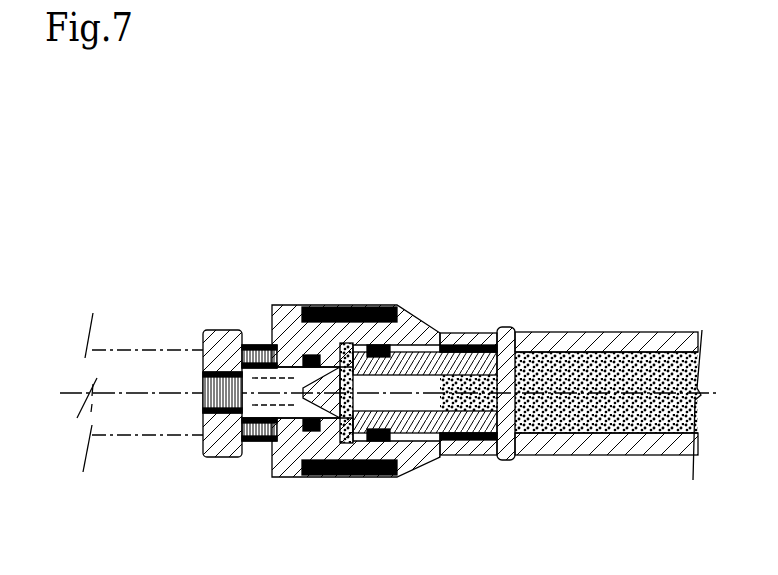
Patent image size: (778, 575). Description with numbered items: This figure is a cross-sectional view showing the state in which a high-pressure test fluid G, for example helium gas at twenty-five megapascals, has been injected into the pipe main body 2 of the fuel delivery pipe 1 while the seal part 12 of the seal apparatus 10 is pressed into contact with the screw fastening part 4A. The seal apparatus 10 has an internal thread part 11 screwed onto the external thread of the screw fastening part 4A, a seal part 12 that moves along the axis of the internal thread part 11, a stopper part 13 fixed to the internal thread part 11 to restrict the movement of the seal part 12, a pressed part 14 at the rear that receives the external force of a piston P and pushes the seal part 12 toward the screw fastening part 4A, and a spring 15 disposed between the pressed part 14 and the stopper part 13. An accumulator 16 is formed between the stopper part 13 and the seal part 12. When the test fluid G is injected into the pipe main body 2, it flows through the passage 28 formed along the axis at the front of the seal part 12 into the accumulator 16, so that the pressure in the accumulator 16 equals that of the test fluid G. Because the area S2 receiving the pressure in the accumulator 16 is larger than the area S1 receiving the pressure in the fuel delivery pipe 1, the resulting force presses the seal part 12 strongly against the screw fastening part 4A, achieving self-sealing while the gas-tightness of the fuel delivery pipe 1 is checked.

The fuel delivery pipe 1 is at (606, 342).
The pipe main body 2 is at (606, 434).
The screw fastening part 4A is at (508, 353).
The seal apparatus 10 is at (310, 239).
The internal thread part 11 is at (468, 442).
The seal part 12 is at (400, 344).
The stopper part 13 is at (348, 355).
The pressed part 14 is at (219, 352).
The spring 15 is at (250, 434).
The accumulator 16 is at (349, 428).
The passage 28 is at (369, 316).
The piston P is at (147, 342).
The area receiving test fluid pressure in the fuel delivery pipe S1 is at (385, 397).
The area receiving test fluid pressure in the accumulator S2 is at (358, 385).
The test fluid G is at (569, 432).